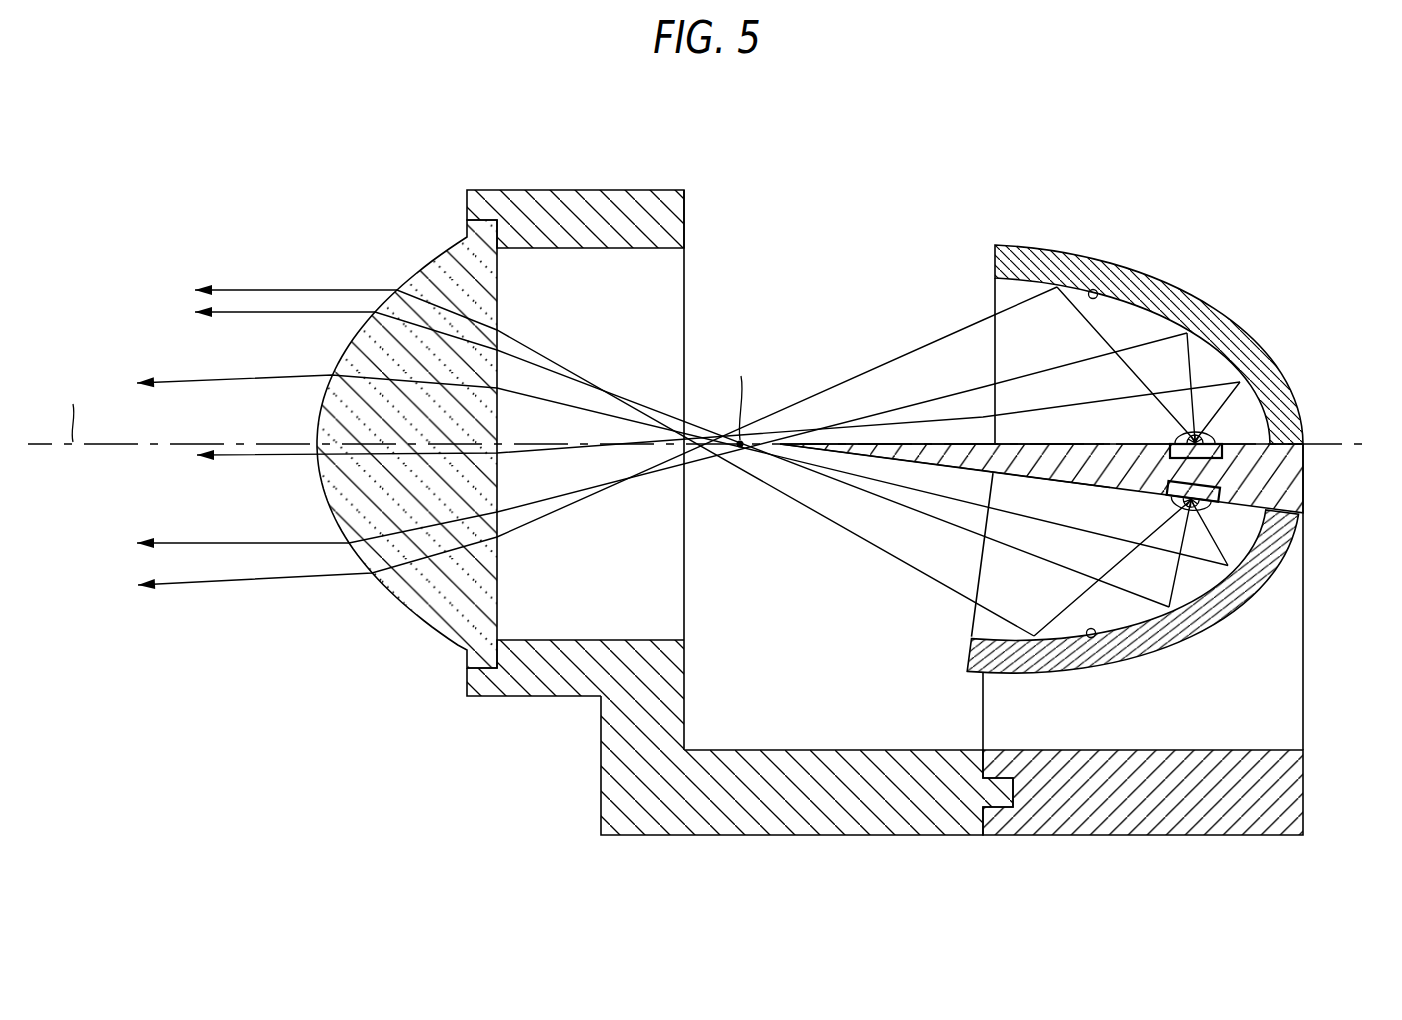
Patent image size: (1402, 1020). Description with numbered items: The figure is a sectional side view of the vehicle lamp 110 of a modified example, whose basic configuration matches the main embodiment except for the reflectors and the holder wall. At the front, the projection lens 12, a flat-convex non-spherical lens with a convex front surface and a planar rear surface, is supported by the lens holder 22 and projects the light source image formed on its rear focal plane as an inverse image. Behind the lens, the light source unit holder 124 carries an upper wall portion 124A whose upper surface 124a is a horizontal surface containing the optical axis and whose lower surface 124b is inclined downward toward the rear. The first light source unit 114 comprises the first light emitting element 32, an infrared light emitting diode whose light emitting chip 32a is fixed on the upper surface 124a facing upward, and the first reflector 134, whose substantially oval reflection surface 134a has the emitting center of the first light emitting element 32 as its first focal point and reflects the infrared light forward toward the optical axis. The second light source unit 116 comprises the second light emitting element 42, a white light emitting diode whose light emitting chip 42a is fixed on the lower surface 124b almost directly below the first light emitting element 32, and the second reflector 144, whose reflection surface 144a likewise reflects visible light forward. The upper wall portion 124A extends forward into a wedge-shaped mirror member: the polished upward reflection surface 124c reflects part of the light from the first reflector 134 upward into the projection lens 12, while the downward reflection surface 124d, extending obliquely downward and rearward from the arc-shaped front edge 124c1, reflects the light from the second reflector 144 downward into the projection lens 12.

The vehicle lamp 110 is at (707, 467).
The projection lens 12 is at (416, 266).
The lens holder 22 is at (518, 182).
The first light source unit 114 is at (1070, 487).
The second light source unit 116 is at (901, 630).
The light source unit holder 124 is at (983, 698).
The upper wall portion 124A is at (1292, 478).
The upper surface 124a is at (1046, 443).
The lower surface 124b is at (1046, 479).
The upward reflection surface 124c is at (870, 443).
The front edge 124c1 is at (780, 447).
The downward reflection surface 124d is at (858, 455).
The first reflector 134 is at (1199, 288).
The reflection surface 134a is at (1094, 289).
The second reflector 144 is at (1258, 604).
The reflection surface 144a is at (1091, 638).
The first light emitting element 32 is at (1180, 438).
The light emitting chip 32a is at (1222, 433).
The second light emitting element 42 is at (1172, 503).
The light emitting chip 42a is at (1222, 503).